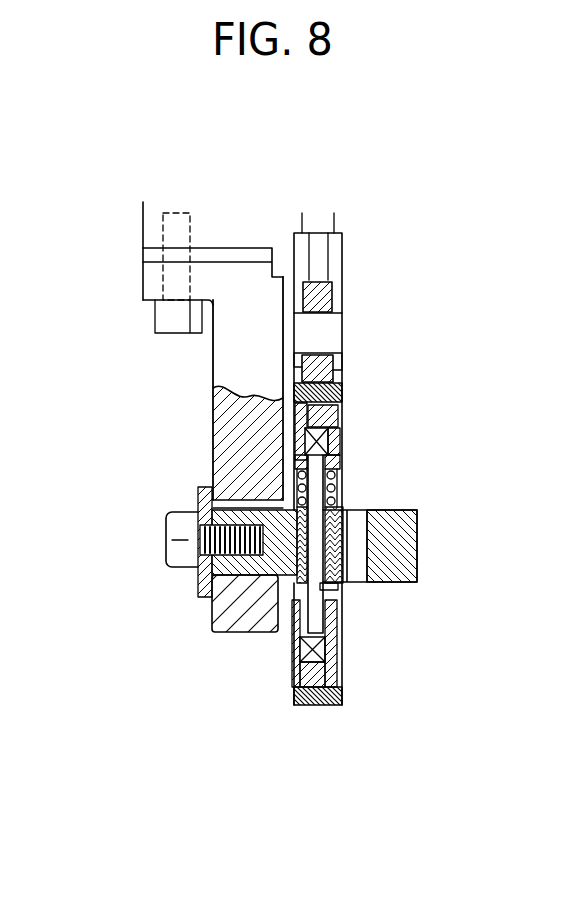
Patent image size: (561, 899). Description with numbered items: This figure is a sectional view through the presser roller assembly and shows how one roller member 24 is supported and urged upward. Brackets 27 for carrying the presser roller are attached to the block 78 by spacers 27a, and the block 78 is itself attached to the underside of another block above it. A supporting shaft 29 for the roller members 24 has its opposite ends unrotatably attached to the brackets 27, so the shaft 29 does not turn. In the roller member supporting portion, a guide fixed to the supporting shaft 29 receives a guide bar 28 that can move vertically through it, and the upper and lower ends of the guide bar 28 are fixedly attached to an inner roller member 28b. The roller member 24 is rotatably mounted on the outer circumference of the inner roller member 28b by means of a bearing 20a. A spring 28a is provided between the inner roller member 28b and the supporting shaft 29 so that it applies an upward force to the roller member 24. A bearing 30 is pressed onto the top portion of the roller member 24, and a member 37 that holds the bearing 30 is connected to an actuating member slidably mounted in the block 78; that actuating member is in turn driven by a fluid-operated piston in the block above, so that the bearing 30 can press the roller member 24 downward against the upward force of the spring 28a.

The block 78 is at (142, 228).
The spacers 27a is at (148, 253).
The brackets 27 is at (222, 415).
The member of holding the bearing 37 is at (341, 253).
The bearing 30 is at (340, 376).
The bearing 20a is at (341, 440).
The inner roller member 28b is at (339, 456).
The spring 28a is at (343, 487).
The guide bar 28 is at (308, 598).
The supporting shaft 29 is at (397, 582).
The roller members 24 is at (327, 705).